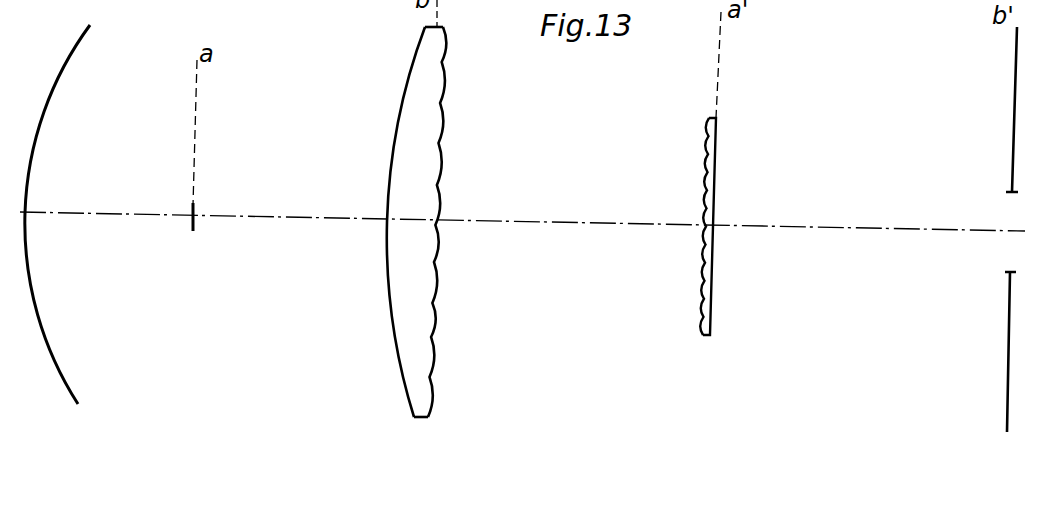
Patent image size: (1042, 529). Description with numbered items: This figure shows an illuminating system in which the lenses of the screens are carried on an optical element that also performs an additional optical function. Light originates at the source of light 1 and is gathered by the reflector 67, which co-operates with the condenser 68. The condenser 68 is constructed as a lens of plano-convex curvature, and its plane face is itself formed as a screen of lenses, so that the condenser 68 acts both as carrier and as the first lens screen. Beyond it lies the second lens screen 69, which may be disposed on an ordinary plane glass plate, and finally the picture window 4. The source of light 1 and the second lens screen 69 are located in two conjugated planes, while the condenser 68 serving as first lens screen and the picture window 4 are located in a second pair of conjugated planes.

The reflector 67 is at (52, 90).
The condenser 68 is at (415, 98).
The second lens screen 69 is at (706, 303).
The source of light 1 is at (191, 230).
The picture window 4 is at (1005, 422).